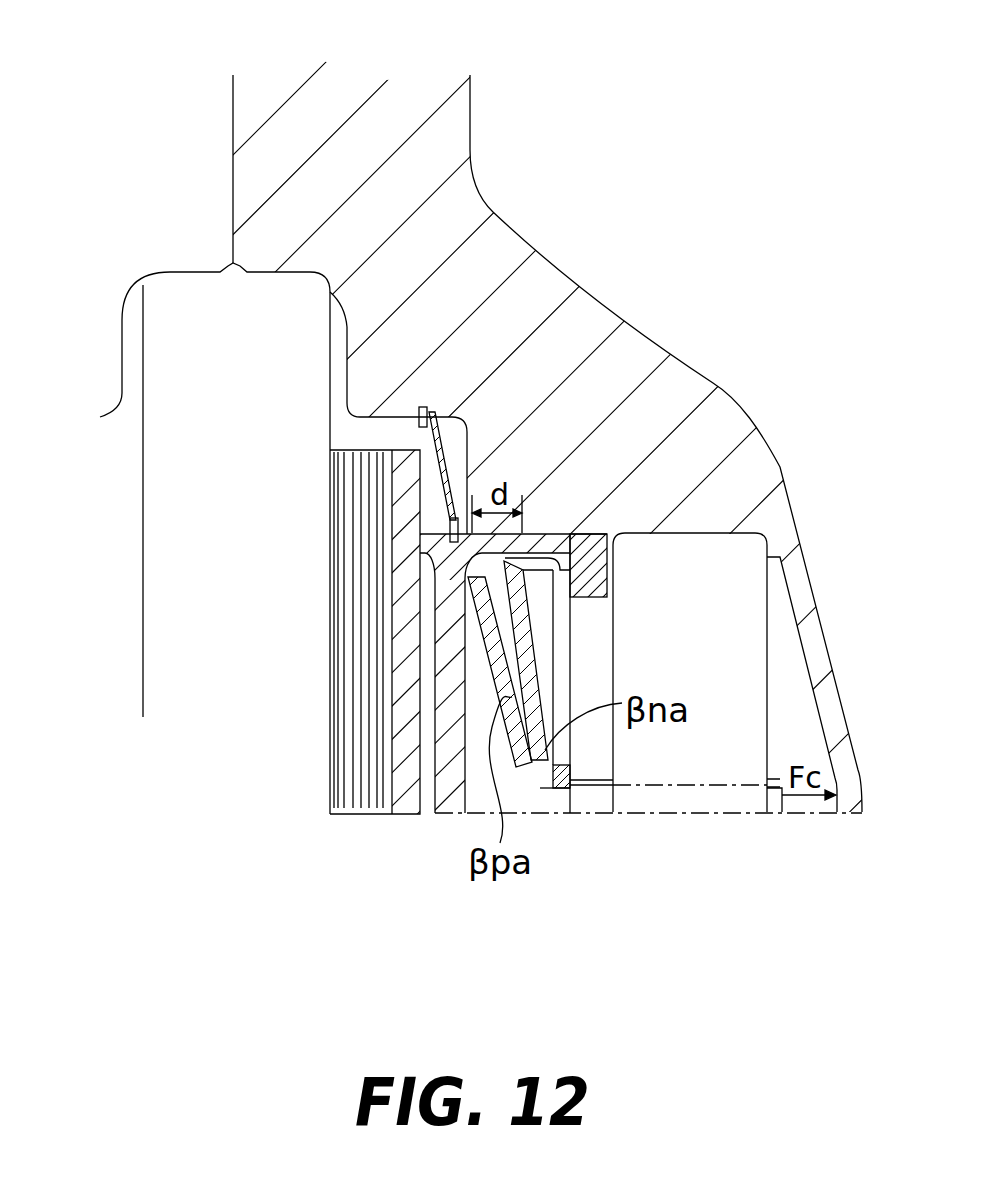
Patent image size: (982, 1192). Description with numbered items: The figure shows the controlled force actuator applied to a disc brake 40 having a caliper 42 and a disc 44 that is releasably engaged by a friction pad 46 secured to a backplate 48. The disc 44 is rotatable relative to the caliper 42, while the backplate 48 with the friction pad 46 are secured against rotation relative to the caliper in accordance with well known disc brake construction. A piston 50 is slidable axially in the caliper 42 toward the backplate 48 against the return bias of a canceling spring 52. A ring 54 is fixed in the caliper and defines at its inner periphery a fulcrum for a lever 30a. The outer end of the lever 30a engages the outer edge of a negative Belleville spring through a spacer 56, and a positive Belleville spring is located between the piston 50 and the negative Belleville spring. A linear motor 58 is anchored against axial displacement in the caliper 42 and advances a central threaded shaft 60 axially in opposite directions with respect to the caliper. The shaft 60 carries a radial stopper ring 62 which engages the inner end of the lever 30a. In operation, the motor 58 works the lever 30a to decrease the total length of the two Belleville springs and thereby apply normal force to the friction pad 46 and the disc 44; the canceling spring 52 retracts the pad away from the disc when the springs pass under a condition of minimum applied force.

The disc brake 40 is at (210, 229).
The caliper 42 is at (375, 128).
The disc 44 is at (163, 474).
The friction pad 46 is at (347, 630).
The backplate 48 is at (393, 763).
The piston 50 is at (438, 797).
The canceling spring 52 is at (430, 447).
The ring 54 is at (597, 545).
The spacer 56 is at (548, 533).
The linear motor 58 is at (737, 580).
The central threaded shaft 60 is at (597, 802).
The radial stopper ring 62 is at (541, 790).
The lever 30a is at (560, 663).